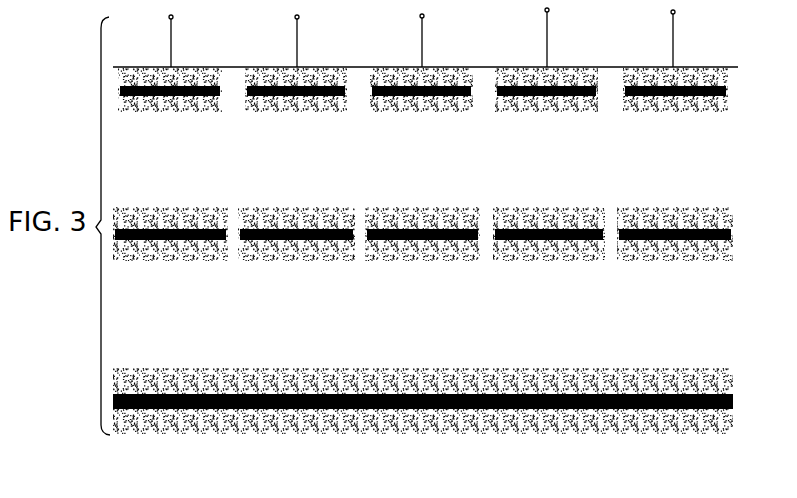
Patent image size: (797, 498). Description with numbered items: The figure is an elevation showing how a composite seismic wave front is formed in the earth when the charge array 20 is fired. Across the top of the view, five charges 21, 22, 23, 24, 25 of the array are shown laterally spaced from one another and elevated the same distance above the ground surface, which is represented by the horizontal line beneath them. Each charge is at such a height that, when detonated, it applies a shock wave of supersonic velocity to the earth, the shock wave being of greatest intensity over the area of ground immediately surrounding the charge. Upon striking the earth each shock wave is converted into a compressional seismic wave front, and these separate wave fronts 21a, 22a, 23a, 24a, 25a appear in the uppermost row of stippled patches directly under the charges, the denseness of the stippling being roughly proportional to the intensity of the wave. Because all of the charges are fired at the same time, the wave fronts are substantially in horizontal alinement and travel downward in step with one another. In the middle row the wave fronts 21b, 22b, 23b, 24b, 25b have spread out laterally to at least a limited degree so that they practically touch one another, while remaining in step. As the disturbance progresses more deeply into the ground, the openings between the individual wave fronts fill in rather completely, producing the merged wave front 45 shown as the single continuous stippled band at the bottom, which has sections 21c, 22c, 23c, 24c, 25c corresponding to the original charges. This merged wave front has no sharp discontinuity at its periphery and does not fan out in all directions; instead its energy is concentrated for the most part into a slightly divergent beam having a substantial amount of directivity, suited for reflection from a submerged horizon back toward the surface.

The charge array 20 is at (84, 25).
The merged wave front 45 is at (123, 457).
The charge 21 is at (172, 19).
The wave front 21a is at (190, 112).
The wave front 21b is at (192, 261).
The wave front section 21c is at (205, 434).
The charge 22 is at (298, 19).
The wave front 22a is at (316, 112).
The wave front 22b is at (318, 261).
The wave front section 22c is at (329, 434).
The charge 23 is at (423, 18).
The wave front 23a is at (441, 112).
The wave front 23b is at (444, 261).
The wave front section 23c is at (463, 434).
The charge 24 is at (548, 12).
The wave front 24a is at (566, 112).
The wave front 24b is at (571, 261).
The wave front section 24c is at (580, 434).
The charge 25 is at (674, 14).
The wave front 25a is at (695, 112).
The wave front 25b is at (697, 261).
The wave front section 25c is at (708, 434).